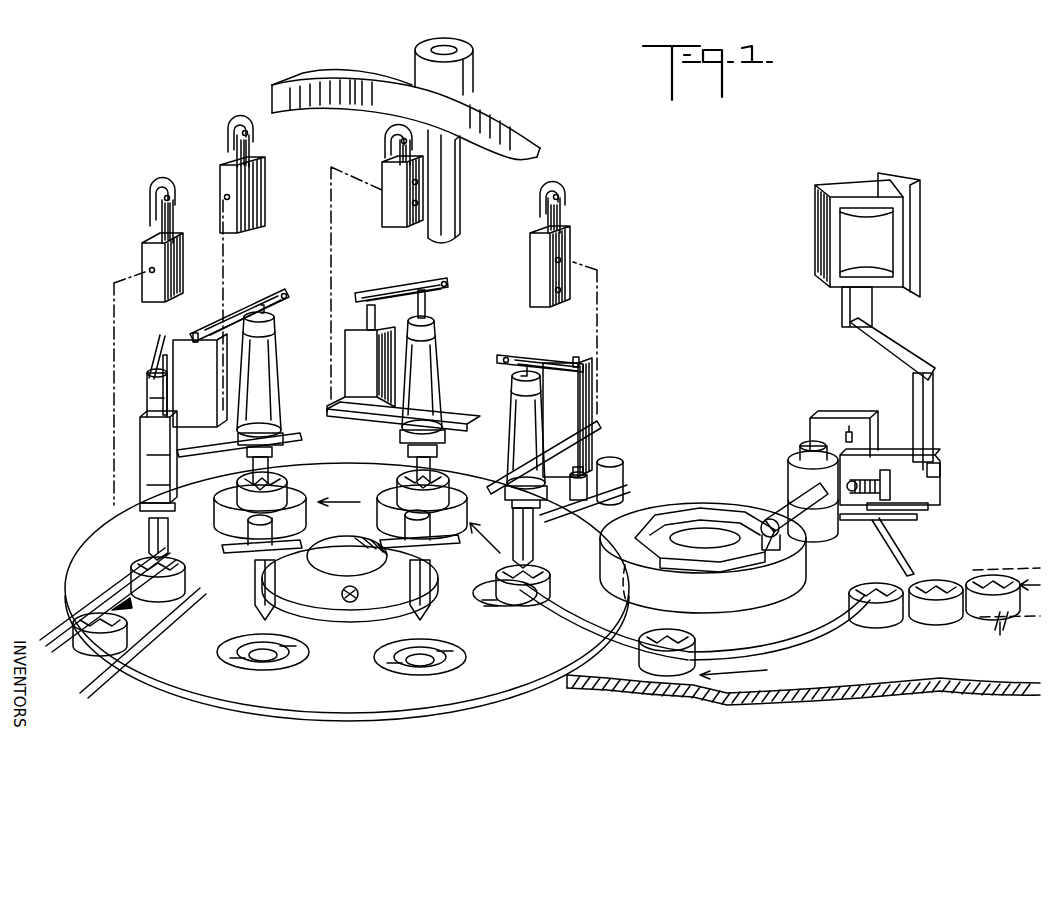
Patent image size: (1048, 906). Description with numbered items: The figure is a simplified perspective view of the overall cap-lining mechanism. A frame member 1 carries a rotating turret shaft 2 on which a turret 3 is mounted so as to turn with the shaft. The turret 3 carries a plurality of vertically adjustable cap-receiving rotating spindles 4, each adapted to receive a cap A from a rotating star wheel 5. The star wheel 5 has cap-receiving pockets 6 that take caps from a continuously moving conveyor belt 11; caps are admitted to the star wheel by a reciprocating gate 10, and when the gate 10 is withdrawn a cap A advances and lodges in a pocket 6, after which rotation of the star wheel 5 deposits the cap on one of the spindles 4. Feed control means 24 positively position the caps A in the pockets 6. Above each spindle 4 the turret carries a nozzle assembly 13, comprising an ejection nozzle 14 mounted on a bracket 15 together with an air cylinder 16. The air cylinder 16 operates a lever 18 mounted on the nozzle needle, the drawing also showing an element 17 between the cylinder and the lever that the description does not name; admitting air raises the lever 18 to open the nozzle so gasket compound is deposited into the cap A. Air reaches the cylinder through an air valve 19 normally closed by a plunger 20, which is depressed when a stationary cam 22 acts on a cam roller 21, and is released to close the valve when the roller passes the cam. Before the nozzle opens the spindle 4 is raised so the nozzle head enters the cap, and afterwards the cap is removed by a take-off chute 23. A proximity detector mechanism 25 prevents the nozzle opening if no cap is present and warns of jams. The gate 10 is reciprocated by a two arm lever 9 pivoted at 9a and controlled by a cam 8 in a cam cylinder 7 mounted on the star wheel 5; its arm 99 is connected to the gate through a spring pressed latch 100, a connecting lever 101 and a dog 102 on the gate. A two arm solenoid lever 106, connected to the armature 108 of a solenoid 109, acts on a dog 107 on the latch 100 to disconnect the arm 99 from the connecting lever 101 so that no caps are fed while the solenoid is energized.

The frame member 1 is at (600, 690).
The rotating turret shaft 2 is at (352, 540).
The turret 3 is at (312, 716).
The cap-receiving rotating spindle 4 is at (262, 645).
The cap A is at (245, 484).
The rotating star wheel 5 is at (805, 620).
The cap-receiving pocket 6 is at (707, 640).
The cam cylinder 7 is at (708, 508).
The cam 8 is at (660, 510).
The two arm lever 9 is at (792, 502).
The pivot 9a is at (812, 448).
The reciprocating gate 10 is at (908, 553).
The conveyor belt 11 is at (944, 617).
The nozzle assembly 13 is at (142, 470).
The ejection nozzle 14 is at (169, 535).
The bracket 15 is at (303, 440).
The air cylinder 16 is at (182, 336).
The piston rod 17 is at (196, 345).
The lever 18 is at (240, 317).
The air valve 19 is at (184, 260).
The plunger 20 is at (175, 215).
The cam roller 21 is at (160, 180).
The stationary cam 22 is at (540, 143).
The take-off chute 23 is at (55, 640).
The feed control means 24 is at (970, 435).
The proximity detector mechanism 25 is at (610, 487).
The arm 99 is at (942, 488).
The spring pressed latch 100 is at (942, 468).
The connecting lever 101 is at (928, 507).
The dog 102 is at (907, 520).
The two arm solenoid lever 106 is at (905, 355).
The dog 107 is at (916, 462).
The armature 108 is at (872, 305).
The solenoid 109 is at (888, 255).